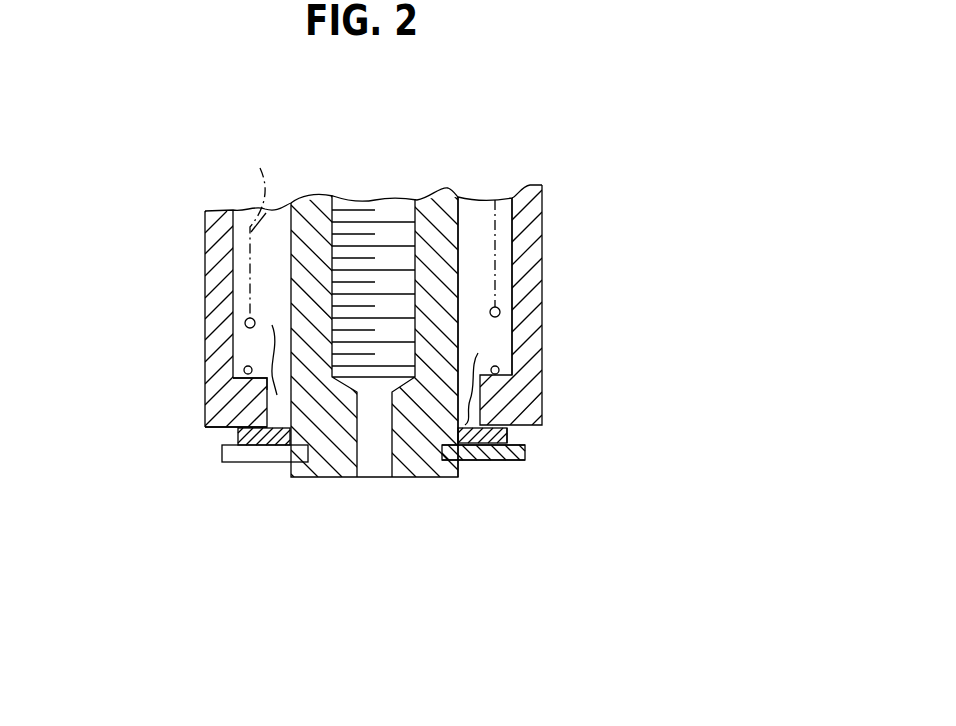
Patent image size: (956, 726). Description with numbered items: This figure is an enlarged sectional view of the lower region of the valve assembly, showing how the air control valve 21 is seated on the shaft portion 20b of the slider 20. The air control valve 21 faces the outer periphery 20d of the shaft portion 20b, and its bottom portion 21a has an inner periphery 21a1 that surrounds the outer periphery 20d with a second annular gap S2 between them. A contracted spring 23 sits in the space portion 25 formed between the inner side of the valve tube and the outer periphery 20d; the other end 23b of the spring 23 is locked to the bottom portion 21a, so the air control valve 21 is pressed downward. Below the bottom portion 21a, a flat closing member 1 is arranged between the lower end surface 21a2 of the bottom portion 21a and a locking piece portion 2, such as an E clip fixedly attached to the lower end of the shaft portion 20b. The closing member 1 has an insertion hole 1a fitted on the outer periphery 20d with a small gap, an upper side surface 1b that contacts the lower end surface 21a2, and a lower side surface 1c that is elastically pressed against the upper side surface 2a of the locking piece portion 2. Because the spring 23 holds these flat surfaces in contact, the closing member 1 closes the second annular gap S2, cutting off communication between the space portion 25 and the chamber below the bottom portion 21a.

The closing member 1 is at (508, 435).
The insertion hole 1a is at (482, 460).
The upper side surface 1b is at (482, 369).
The lower side surface 1c is at (601, 443).
The locking piece portion 2 is at (527, 452).
The upper side surface 2a is at (515, 460).
The slider 20 is at (462, 211).
The shaft portion 20b is at (548, 210).
The outer periphery 20d is at (521, 276).
The air control valve 21 is at (205, 257).
The bottom portion 21a is at (217, 400).
The inner periphery 21a1 is at (268, 372).
The lower end surface 21a2 is at (210, 428).
The spring 23 is at (250, 226).
The other end 23b is at (243, 370).
The space portion 25 is at (505, 242).
The second annular gap S2 is at (273, 338).